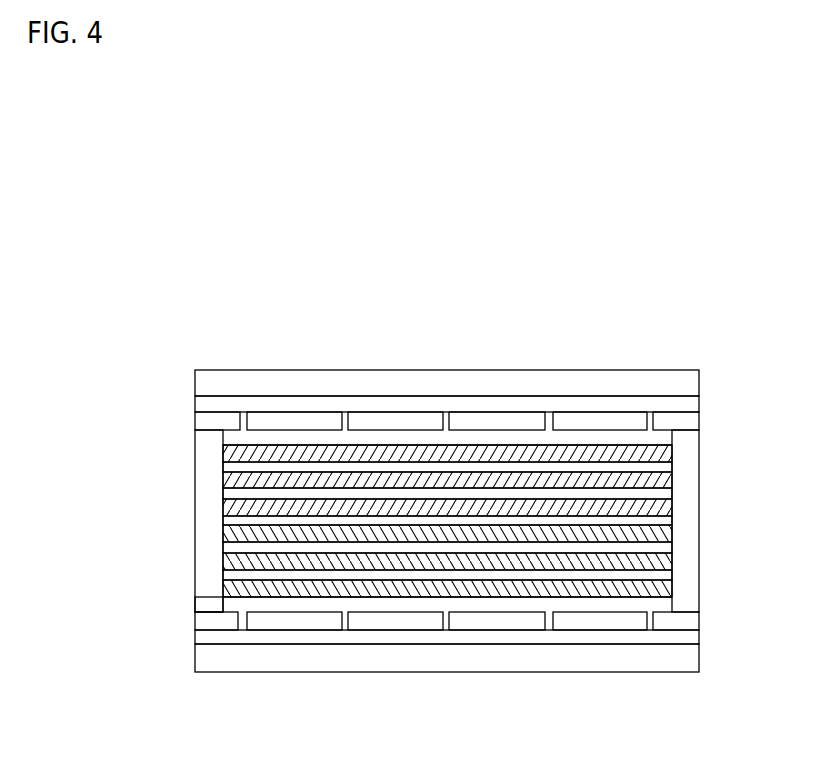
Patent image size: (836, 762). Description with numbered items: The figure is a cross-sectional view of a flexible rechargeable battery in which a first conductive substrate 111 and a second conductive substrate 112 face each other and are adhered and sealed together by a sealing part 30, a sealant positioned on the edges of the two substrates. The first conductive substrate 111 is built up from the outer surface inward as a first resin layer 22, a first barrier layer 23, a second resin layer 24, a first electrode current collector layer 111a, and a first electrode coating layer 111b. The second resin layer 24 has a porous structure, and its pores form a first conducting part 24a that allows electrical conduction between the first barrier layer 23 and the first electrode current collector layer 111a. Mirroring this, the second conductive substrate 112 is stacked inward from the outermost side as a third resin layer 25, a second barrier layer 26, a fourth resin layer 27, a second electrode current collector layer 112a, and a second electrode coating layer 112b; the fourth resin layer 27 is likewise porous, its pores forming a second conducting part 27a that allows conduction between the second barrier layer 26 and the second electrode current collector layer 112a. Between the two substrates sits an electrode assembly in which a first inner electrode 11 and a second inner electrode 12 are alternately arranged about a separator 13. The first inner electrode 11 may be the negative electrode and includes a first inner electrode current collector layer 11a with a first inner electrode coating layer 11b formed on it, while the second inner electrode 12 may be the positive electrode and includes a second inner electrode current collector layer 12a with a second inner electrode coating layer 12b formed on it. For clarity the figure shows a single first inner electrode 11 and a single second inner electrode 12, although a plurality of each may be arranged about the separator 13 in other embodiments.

The first inner electrode 11 is at (637, 714).
The first inner electrode current collector layer 11a is at (595, 548).
The first inner electrode coating layer 11b is at (553, 528).
The second inner electrode 12 is at (370, 714).
The second inner electrode current collector layer 12a is at (332, 493).
The second inner electrode coating layer 12b is at (289, 475).
The separator 13 is at (660, 465).
The first resin layer 22 is at (207, 383).
The first barrier layer 23 is at (207, 405).
The second resin layer 24 is at (205, 421).
The first conducting part 24a is at (657, 422).
The third resin layer 25 is at (200, 667).
The second barrier layer 26 is at (205, 640).
The fourth resin layer 27 is at (205, 624).
The second conducting part 27a is at (657, 620).
The sealing part 30 is at (690, 455).
The first conductive substrate 111 is at (80, 332).
The first electrode current collector layer 111a is at (230, 439).
The first electrode coating layer 111b is at (220, 462).
The second conductive substrate 112 is at (71, 600).
The second electrode current collector layer 112a is at (223, 605).
The second electrode coating layer 112b is at (213, 598).